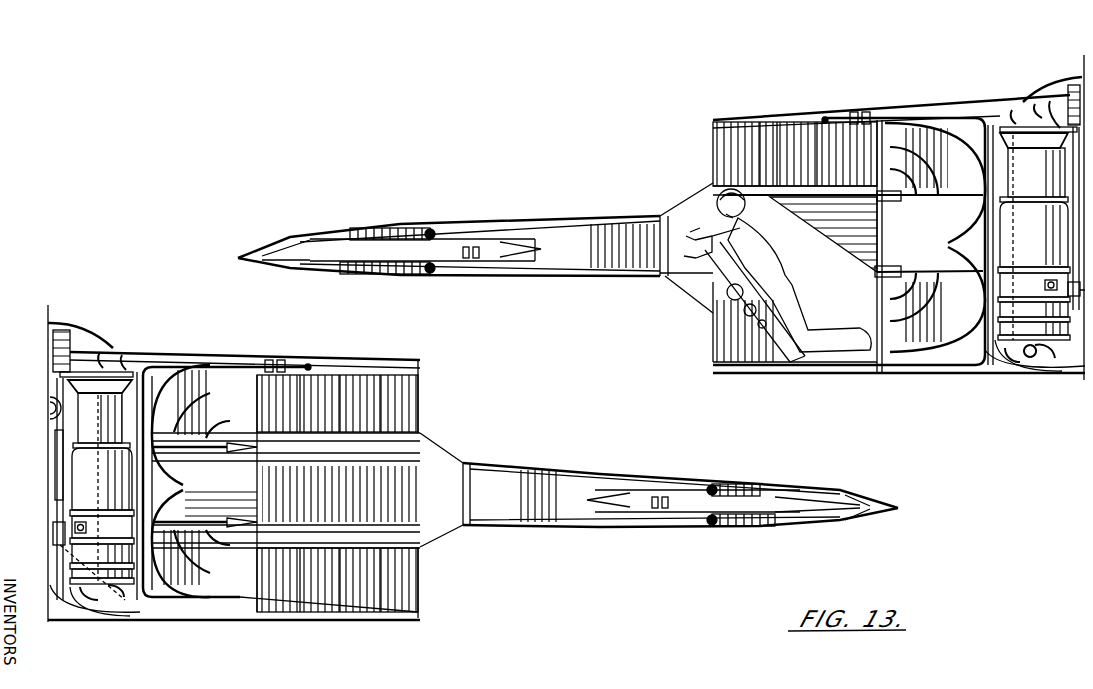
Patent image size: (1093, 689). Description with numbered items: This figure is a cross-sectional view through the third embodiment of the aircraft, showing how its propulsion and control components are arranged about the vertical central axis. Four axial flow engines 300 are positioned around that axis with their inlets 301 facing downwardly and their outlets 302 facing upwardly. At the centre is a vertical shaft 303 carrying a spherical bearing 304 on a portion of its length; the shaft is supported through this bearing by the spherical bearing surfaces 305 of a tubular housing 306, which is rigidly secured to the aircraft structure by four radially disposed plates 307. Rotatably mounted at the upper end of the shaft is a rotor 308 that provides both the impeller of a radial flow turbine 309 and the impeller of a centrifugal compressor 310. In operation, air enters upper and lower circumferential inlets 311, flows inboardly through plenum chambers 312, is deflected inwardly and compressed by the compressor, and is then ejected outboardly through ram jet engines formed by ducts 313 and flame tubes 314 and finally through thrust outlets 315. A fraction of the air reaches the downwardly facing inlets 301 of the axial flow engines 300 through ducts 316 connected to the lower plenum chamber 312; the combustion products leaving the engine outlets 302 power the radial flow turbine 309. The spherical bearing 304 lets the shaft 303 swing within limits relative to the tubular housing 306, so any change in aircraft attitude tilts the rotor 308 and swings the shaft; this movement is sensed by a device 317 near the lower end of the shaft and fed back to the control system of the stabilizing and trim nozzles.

The axial flow engine 300 is at (1023, 222).
The inlet 301 is at (1030, 357).
The outlet 302 is at (1005, 127).
The vertical shaft 303 is at (68, 357).
The spherical bearing 304 is at (1030, 100).
The spherical bearing surfaces 305 is at (60, 413).
The tubular housing 306 is at (1050, 127).
The radially disposed plate 307 is at (1075, 282).
The rotor 308 is at (907, 100).
The radial flow turbine 309 is at (865, 110).
The centrifugal compressor 310 is at (893, 262).
The circumferential inlet 311 is at (708, 178).
The plenum chamber 312 is at (884, 167).
The duct 313 is at (580, 230).
The flame tube 314 is at (490, 245).
The thrust outlet 315 is at (395, 225).
The duct 316 is at (982, 363).
The sensing device 317 is at (960, 373).